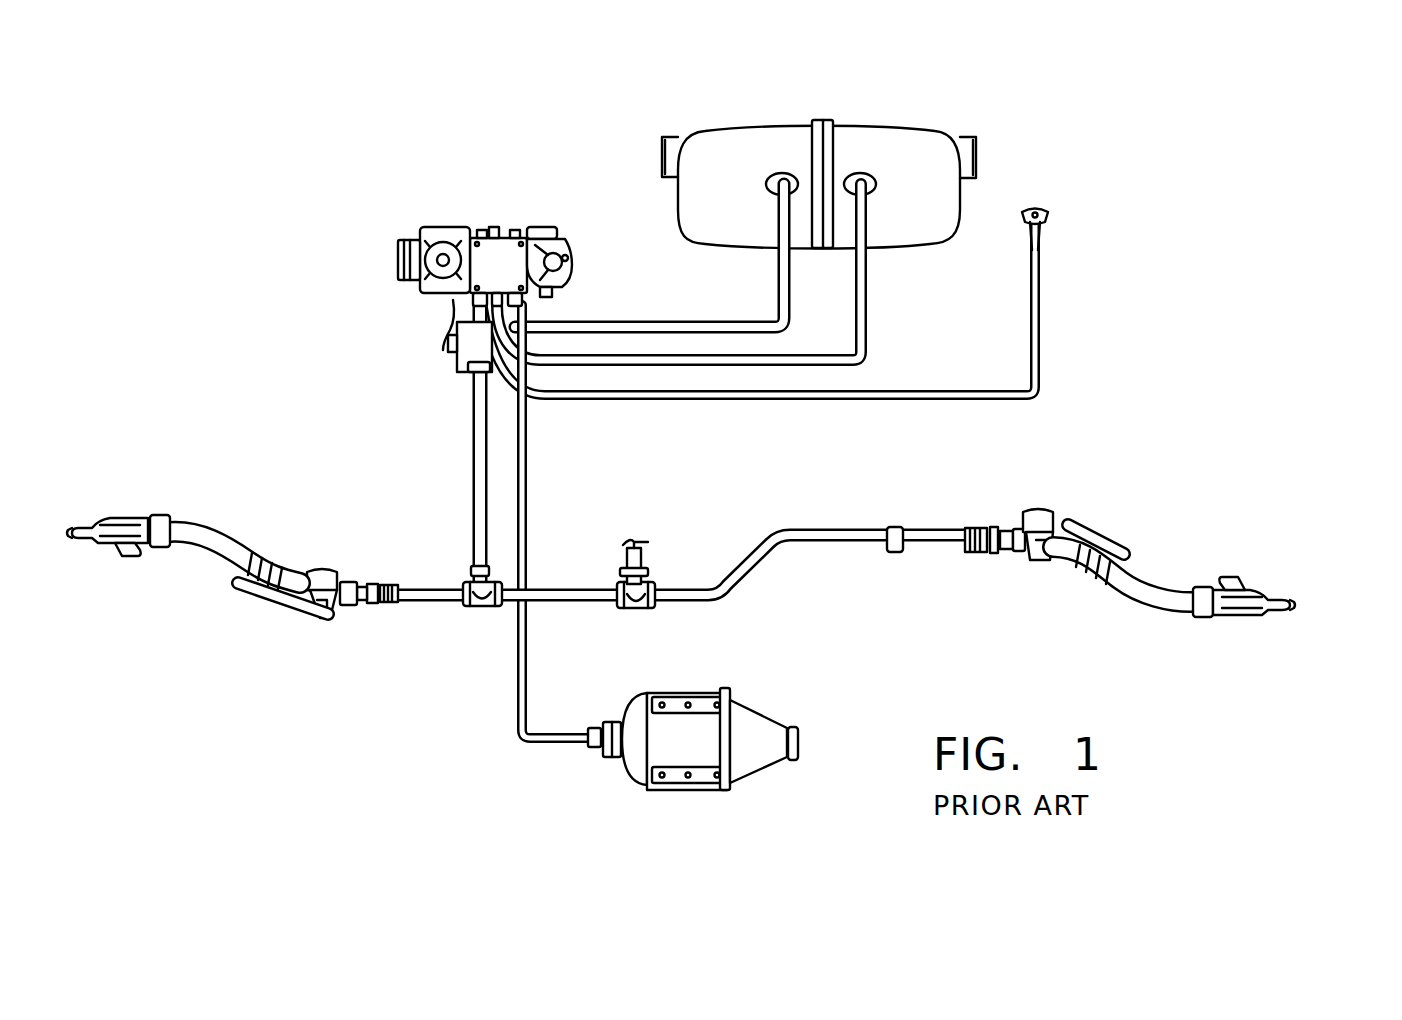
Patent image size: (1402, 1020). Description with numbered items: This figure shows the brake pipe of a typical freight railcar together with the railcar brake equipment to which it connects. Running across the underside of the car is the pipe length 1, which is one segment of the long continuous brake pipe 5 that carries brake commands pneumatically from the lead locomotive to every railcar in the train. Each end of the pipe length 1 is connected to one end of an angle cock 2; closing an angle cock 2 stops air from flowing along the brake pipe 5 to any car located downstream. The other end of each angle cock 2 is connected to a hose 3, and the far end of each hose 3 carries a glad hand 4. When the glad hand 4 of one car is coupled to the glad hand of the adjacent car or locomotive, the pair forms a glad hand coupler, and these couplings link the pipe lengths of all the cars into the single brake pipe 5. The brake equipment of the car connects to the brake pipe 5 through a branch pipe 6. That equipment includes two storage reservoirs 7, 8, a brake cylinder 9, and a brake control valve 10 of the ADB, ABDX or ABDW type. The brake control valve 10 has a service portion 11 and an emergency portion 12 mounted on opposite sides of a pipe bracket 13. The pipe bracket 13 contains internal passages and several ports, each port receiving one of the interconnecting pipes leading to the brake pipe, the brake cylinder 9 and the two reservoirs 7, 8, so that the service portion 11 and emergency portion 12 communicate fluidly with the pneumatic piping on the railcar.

The pipe length 1 is at (568, 592).
The angle cock 2 is at (323, 570).
The hose 3 is at (223, 535).
The glad hand 4 is at (123, 517).
The brake pipe 5 is at (1300, 642).
The branch pipe 6 is at (478, 473).
The storage reservoir 7 is at (903, 190).
The storage reservoir 8 is at (740, 188).
The brake cylinder 9 is at (753, 720).
The brake control valve 10 is at (590, 214).
The service portion 11 is at (398, 260).
The emergency portion 12 is at (570, 275).
The pipe bracket 13 is at (503, 247).